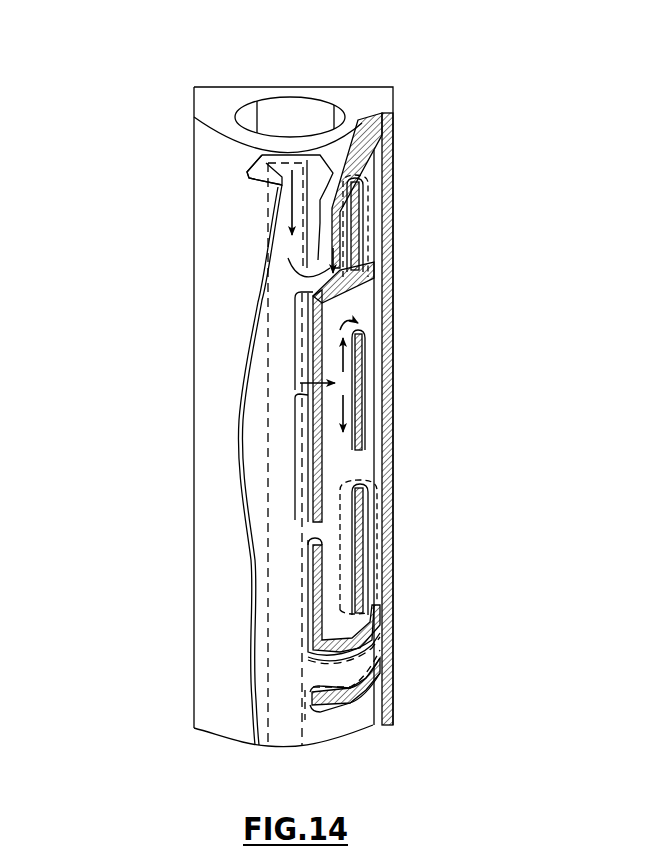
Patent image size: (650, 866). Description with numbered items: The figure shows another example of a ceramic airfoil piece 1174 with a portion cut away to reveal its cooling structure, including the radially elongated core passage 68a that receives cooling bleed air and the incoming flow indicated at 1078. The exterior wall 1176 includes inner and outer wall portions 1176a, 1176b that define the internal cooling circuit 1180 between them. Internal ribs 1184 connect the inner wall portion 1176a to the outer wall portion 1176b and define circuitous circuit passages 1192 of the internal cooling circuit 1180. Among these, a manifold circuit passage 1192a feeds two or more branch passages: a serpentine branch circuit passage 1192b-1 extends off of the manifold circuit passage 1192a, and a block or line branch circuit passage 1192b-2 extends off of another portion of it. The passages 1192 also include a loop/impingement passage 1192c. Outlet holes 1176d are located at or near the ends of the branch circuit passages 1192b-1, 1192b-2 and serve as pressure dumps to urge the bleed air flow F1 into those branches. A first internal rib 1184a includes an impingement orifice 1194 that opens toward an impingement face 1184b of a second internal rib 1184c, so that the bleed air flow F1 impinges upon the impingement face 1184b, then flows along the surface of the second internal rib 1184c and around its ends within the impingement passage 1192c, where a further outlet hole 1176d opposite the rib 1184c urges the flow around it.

The ceramic airfoil piece 1174 is at (116, 620).
The core passage 68a is at (271, 130).
The fluid flow 1078 is at (291, 110).
The exterior wall 1176 is at (246, 190).
The inner wall portion 1176a is at (298, 153).
The outer wall portion 1176b is at (250, 174).
The outlet holes 1176d is at (360, 245).
The internal cooling circuit 1180 is at (279, 331).
The circuit passages 1192 is at (355, 296).
The manifold circuit passage 1192a is at (298, 386).
The serpentine branch circuit passage 1192b-1 is at (350, 200).
The block or line branch circuit passage 1192b-2 is at (355, 682).
The loop/impingement passage 1192c is at (368, 518).
The internal ribs 1184 is at (370, 250).
The first internal rib 1184a is at (345, 405).
The impingement face 1184b is at (358, 375).
The second internal rib 1184c is at (348, 355).
The impingement orifice 1194 is at (350, 445).
The bleed air flow F1 is at (365, 325).